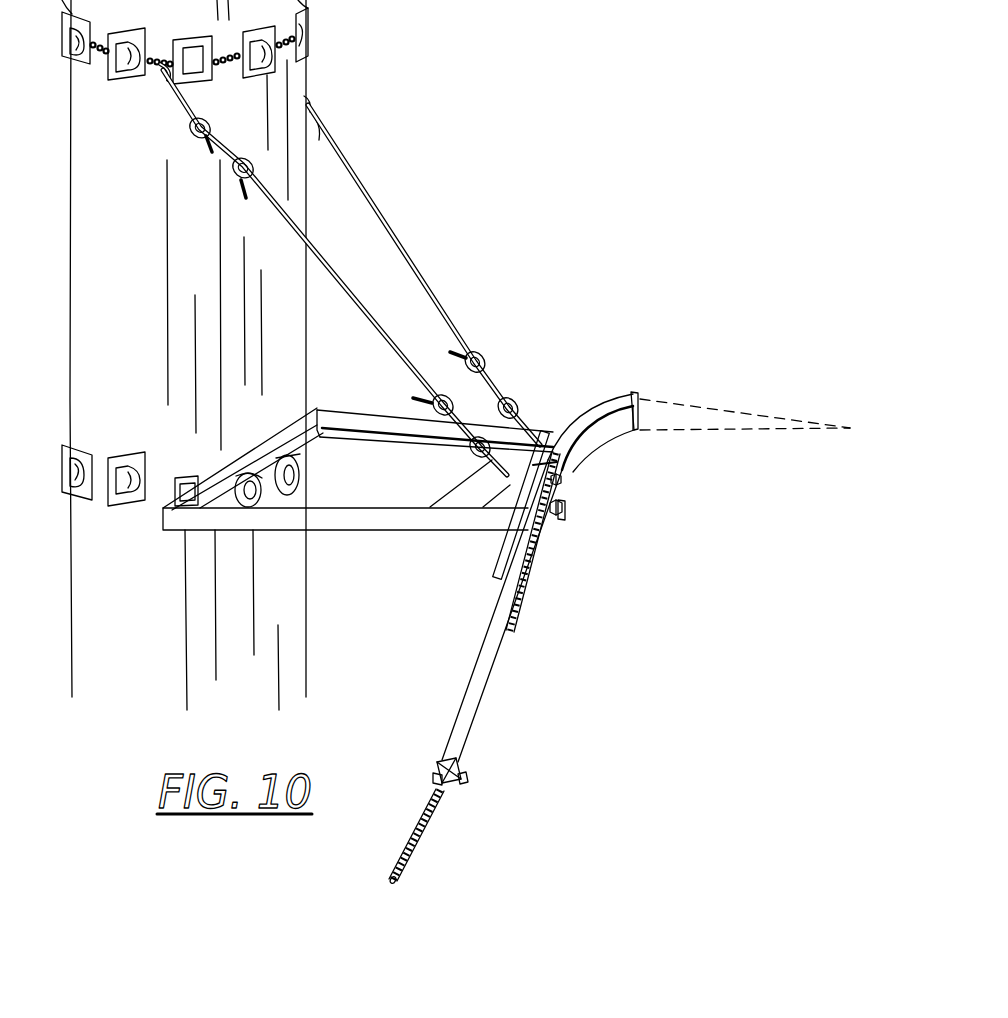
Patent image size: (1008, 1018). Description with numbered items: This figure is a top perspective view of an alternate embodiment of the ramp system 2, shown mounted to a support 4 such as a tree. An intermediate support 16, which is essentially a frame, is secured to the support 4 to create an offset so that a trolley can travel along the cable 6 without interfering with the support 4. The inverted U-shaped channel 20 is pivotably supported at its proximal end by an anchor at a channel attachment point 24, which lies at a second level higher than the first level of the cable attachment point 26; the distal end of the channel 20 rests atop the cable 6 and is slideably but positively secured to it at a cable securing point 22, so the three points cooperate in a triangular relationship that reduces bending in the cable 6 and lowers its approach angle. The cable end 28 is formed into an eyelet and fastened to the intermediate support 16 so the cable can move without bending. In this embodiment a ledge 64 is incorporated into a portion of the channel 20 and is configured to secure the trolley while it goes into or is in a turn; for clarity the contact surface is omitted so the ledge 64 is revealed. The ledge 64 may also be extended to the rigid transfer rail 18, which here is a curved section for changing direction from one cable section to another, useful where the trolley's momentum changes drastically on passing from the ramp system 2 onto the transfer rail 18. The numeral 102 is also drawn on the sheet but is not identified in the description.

The ramp system 2 is at (506, 625).
The support 4 is at (70, 348).
The cable 6 is at (420, 838).
The intermediate support 16 is at (348, 527).
The transfer rail 18 is at (597, 410).
The inverted U-shaped channel 20 is at (494, 664).
The cable securing point 22 is at (463, 782).
The channel attachment point 24 is at (565, 478).
The cable attachment point 26 is at (566, 517).
The cable end 28 is at (570, 507).
The ledge 64 is at (546, 431).
The mounting band 102 is at (430, 0).